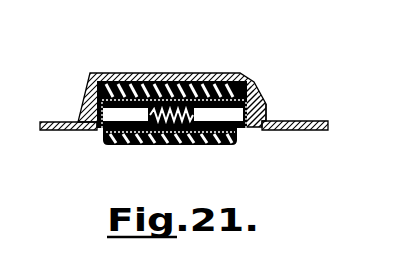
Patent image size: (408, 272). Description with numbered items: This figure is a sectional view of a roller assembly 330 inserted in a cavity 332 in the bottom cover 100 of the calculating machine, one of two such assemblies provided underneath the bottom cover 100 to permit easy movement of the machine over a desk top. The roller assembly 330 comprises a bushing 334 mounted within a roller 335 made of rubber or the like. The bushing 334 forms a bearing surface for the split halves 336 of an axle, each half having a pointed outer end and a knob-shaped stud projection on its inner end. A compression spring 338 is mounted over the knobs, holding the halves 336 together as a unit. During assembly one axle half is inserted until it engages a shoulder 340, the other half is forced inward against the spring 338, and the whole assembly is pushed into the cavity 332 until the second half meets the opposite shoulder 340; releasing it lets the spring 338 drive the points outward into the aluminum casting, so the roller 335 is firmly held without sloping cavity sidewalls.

The bottom cover 100 is at (204, 92).
The roller assembly 330 is at (104, 161).
The cavity 332 is at (93, 92).
The bushing 334 is at (186, 87).
The roller 335 is at (217, 145).
The split halves of an axle 336 is at (245, 128).
The compression spring 338 is at (173, 145).
The shoulder 340 is at (266, 103).